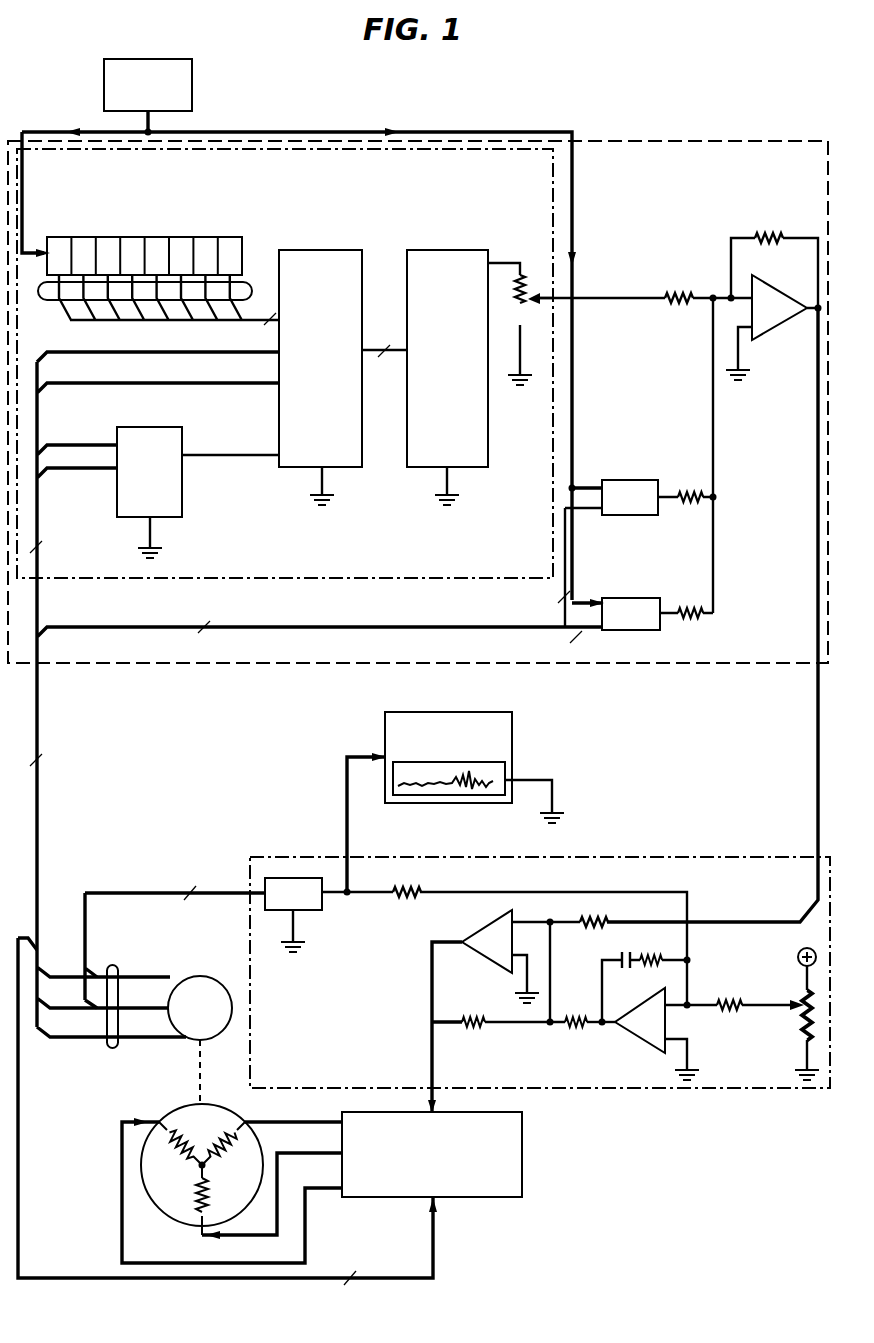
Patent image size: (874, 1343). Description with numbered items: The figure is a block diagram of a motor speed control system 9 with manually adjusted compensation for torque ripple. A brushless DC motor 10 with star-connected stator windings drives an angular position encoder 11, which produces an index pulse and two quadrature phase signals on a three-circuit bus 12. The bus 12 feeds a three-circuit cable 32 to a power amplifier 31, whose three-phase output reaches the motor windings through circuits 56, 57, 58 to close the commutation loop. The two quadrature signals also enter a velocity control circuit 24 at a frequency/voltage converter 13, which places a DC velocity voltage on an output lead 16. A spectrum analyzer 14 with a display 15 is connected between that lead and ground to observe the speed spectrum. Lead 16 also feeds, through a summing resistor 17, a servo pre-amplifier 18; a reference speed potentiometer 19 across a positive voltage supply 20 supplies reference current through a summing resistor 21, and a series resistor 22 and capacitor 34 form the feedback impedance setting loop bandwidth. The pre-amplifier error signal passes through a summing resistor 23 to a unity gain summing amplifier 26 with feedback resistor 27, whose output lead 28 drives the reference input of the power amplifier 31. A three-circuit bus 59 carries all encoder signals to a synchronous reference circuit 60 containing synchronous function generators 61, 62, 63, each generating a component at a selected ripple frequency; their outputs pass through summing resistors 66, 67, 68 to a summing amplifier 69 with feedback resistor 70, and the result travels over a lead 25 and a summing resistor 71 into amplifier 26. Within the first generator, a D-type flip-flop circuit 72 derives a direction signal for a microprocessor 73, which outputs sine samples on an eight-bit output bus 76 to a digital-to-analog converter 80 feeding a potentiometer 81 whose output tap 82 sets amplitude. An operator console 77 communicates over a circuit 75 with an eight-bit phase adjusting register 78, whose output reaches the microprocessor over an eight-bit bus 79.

The motor speed control system 9 is at (653, 82).
The motor 10 is at (178, 1118).
The angular position encoder 11 is at (216, 978).
The three-circuit bus 12 is at (108, 1048).
The frequency/voltage converter 13 is at (290, 878).
The spectrum analyzer 14 is at (512, 724).
The display 15 is at (506, 770).
The output lead 16 is at (334, 896).
The summing resistor 17 is at (408, 892).
The servo pre-amplifier 18 is at (628, 1032).
The reference speed potentiometer 19 is at (801, 1022).
The positive voltage supply 20 is at (801, 949).
The summing resistor 21 is at (732, 1005).
The feedback resistor 22 is at (646, 960).
The summing resistor 23 is at (575, 1021).
The velocity control circuit 24 is at (704, 857).
The lead 25 is at (817, 781).
The unity gain summing amplifier 26 is at (483, 928).
The feedback resistor 27 is at (477, 1034).
The lead 28 is at (432, 1034).
The power amplifier 31 is at (522, 1154).
The three-circuit cable 32 is at (86, 1278).
The capacitor 34 is at (626, 966).
The circuit 56 is at (306, 1122).
The circuit 57 is at (318, 1153).
The circuit 58 is at (308, 1206).
The three-circuit bus 59 is at (37, 811).
The synchronous reference circuit 60 is at (768, 141).
The synchronous function generator 61 is at (574, 208).
The synchronous function generator 62 is at (628, 480).
The synchronous function generator 63 is at (626, 598).
The summing resistor 66 is at (672, 298).
The summing resistor 67 is at (690, 497).
The summing resistor 68 is at (692, 613).
The summing amplifier 69 is at (781, 324).
The feedback resistor 70 is at (766, 238).
The summing resistor 71 is at (592, 918).
The D-type flip-flop circuit 72 is at (182, 498).
The microprocessor 73 is at (280, 470).
The circuit 75 is at (150, 120).
The 8-bit output bus 76 is at (372, 350).
The operator console 77 is at (104, 70).
The 8-bit phase adjusting register 78 is at (232, 237).
The eight-bit bus 79 is at (40, 294).
The digital-to-analog converter 80 is at (406, 468).
The potentiometer 81 is at (524, 304).
The output tap 82 is at (542, 296).